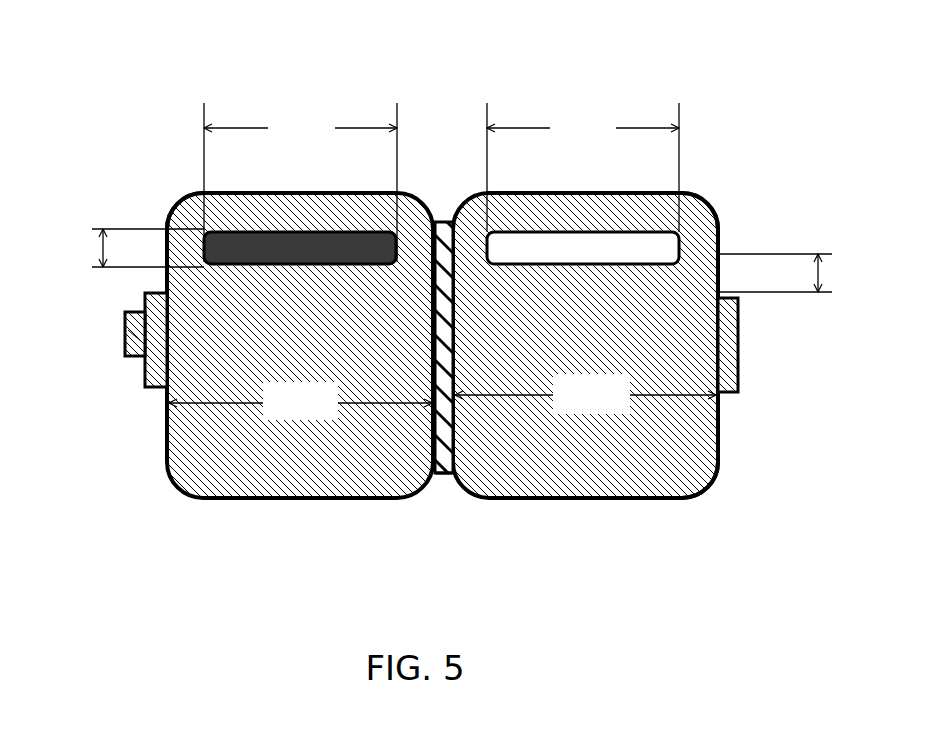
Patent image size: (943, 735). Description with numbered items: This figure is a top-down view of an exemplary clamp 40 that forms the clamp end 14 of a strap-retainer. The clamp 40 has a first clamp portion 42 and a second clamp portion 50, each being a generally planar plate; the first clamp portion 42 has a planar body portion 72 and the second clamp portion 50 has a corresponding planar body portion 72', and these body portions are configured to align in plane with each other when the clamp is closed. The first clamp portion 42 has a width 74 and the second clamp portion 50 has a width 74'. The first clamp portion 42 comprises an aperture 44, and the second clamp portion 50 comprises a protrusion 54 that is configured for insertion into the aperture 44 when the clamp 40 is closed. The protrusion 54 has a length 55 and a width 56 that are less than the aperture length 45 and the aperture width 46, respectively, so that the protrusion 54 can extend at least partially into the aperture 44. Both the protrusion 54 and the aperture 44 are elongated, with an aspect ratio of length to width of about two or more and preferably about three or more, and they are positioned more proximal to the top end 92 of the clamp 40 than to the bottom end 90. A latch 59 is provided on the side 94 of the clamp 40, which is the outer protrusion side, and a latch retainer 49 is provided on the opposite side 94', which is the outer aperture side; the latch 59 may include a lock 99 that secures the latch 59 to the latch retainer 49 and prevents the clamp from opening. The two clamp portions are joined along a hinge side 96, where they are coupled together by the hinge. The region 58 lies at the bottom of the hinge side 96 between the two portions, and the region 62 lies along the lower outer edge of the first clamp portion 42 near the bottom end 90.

The clamp end 14 is at (447, 353).
The clamp 40 is at (268, 495).
The first clamp portion 42 is at (686, 470).
The aperture 44 is at (697, 199).
The aperture length 45 is at (583, 167).
The second slot depth 46 is at (827, 280).
The latch retainer 49 is at (738, 343).
The second clamp portion 50 is at (173, 445).
The protrusion 54 is at (173, 211).
The protrusion length 55 is at (300, 182).
The protrusion width 56 is at (100, 247).
The joint bottom 58 is at (442, 476).
The latch 59 is at (126, 313).
The second body side wall 62 is at (620, 498).
The planar body portion 72 is at (300, 549).
The second body bottom surface 72' is at (505, 533).
The width of first clamp portion 74 is at (585, 394).
The width of second clamp portion 74' is at (300, 401).
The bottom end 90 is at (613, 500).
The top end 92 is at (190, 196).
The side 94 is at (93, 328).
The side 94' is at (784, 409).
The hinge side 96 is at (443, 221).
The lock 99 is at (133, 337).